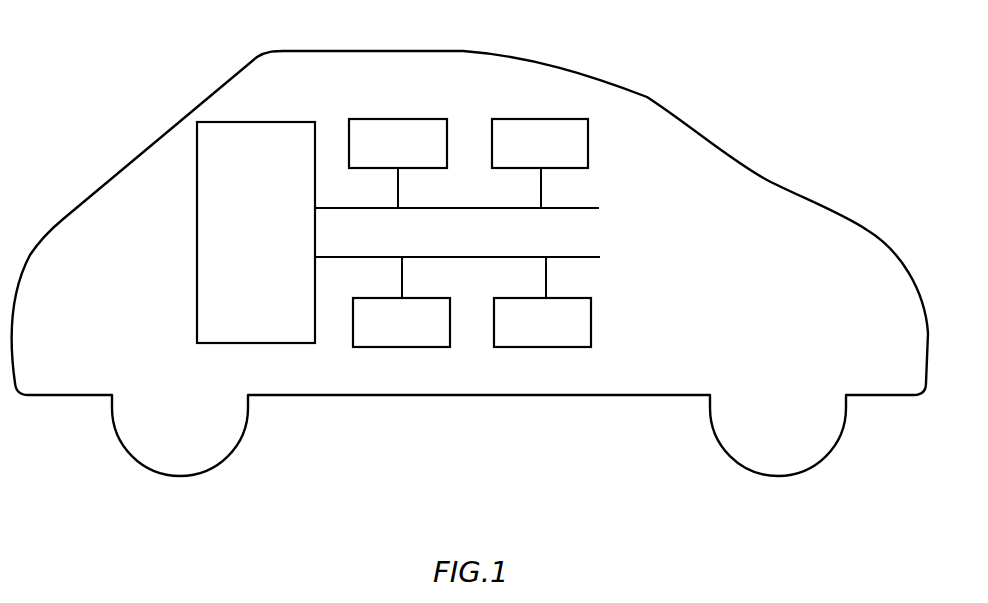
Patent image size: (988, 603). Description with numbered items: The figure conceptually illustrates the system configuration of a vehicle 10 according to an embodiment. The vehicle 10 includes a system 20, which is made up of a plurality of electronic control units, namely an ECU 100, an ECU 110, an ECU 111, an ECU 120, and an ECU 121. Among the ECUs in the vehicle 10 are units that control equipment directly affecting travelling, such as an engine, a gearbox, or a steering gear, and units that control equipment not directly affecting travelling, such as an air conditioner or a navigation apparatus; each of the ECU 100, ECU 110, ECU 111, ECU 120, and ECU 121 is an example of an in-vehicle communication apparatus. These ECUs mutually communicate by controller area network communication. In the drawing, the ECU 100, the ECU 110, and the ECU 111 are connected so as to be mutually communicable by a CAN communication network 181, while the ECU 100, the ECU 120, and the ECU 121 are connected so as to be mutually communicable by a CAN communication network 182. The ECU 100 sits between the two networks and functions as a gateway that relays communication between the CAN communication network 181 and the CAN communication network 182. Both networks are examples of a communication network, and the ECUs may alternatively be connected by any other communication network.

The vehicle 10 is at (650, 97).
The system 20 is at (445, 237).
The ECU 100 is at (247, 122).
The ECU 110 is at (403, 119).
The ECU 111 is at (537, 119).
The ECU 120 is at (415, 347).
The ECU 121 is at (544, 347).
The CAN communication network 181 is at (574, 208).
The CAN communication network 182 is at (575, 257).